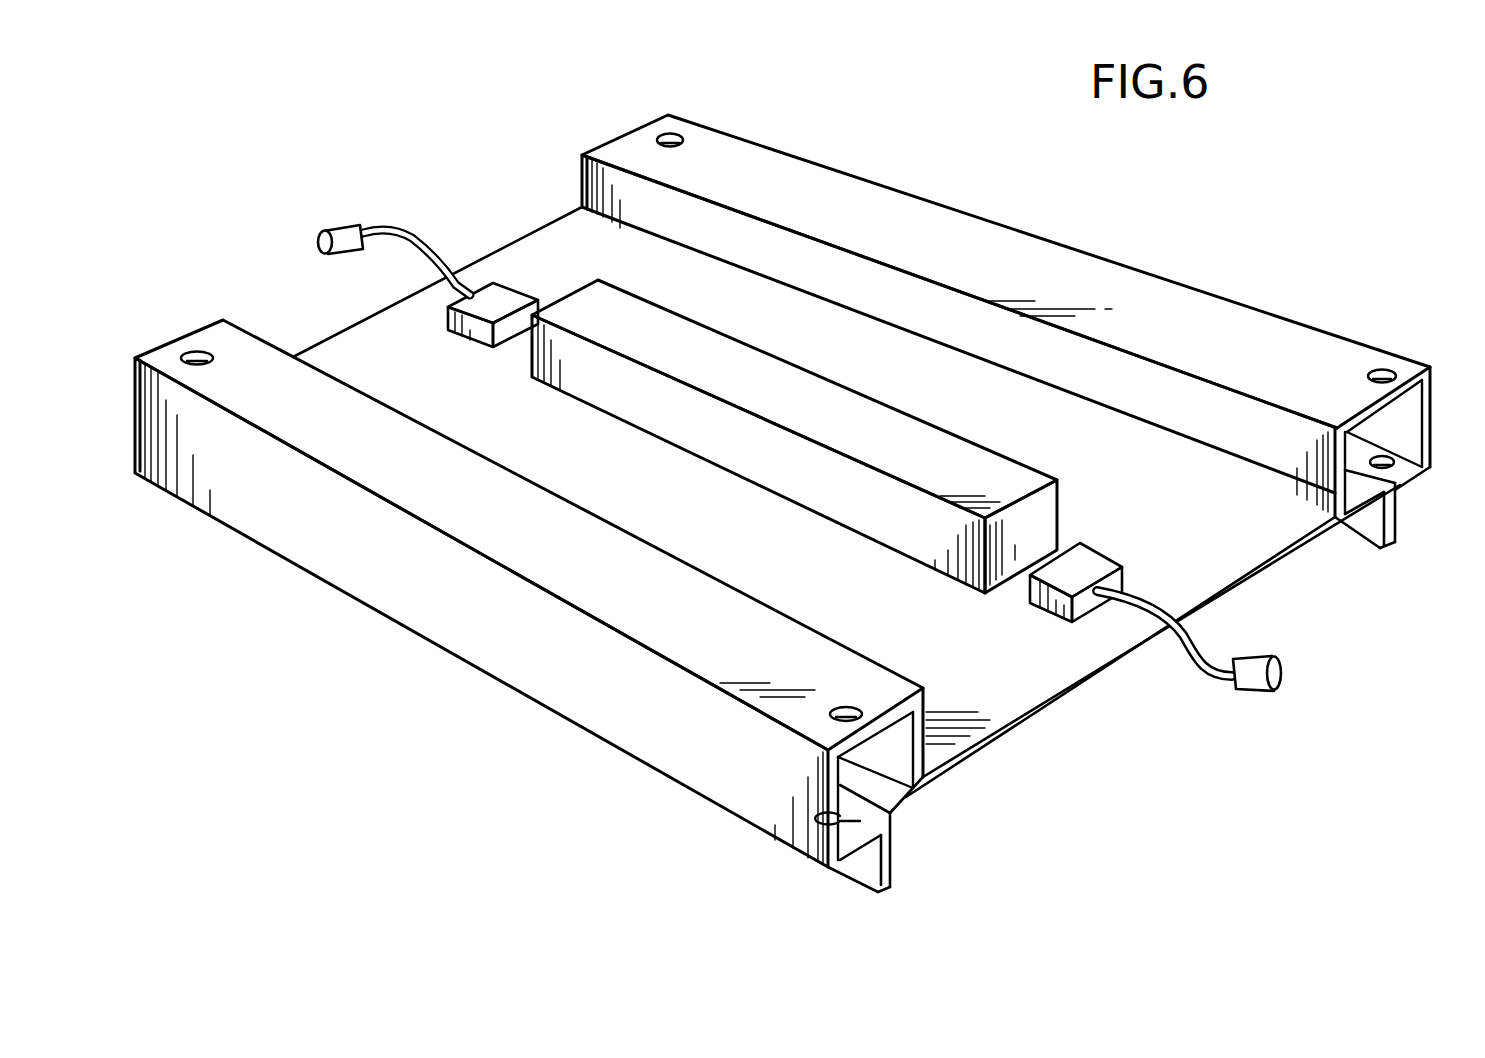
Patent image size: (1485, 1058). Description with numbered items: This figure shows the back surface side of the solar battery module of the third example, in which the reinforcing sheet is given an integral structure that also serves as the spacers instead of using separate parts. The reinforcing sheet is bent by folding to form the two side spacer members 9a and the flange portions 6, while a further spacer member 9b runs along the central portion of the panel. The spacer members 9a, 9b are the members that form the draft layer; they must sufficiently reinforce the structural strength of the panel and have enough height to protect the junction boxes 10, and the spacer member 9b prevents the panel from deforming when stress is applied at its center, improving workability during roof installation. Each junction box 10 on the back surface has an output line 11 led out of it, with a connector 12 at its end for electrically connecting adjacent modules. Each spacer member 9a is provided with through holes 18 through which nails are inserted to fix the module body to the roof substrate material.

The flange portion 6 is at (865, 872).
The spacer member 9a is at (1087, 265).
The spacer member 9b is at (830, 400).
The junction box 10 is at (504, 297).
The output line 11 is at (385, 225).
The connector 12 is at (338, 227).
The through hole 18 is at (1387, 373).